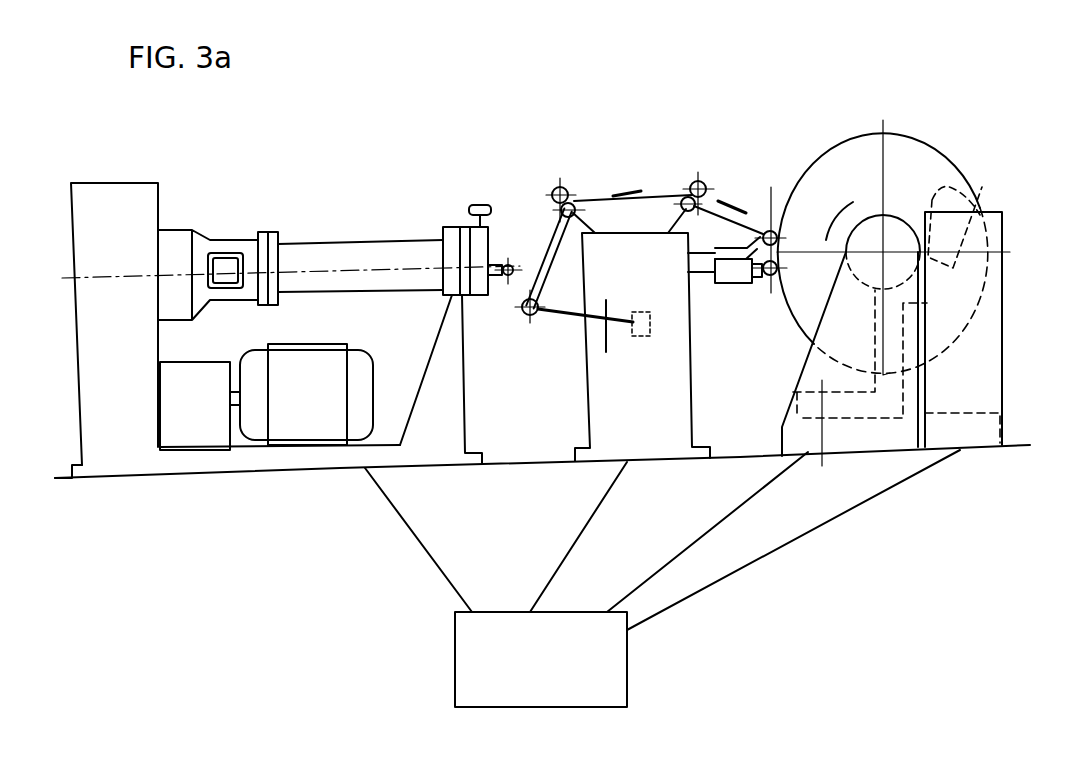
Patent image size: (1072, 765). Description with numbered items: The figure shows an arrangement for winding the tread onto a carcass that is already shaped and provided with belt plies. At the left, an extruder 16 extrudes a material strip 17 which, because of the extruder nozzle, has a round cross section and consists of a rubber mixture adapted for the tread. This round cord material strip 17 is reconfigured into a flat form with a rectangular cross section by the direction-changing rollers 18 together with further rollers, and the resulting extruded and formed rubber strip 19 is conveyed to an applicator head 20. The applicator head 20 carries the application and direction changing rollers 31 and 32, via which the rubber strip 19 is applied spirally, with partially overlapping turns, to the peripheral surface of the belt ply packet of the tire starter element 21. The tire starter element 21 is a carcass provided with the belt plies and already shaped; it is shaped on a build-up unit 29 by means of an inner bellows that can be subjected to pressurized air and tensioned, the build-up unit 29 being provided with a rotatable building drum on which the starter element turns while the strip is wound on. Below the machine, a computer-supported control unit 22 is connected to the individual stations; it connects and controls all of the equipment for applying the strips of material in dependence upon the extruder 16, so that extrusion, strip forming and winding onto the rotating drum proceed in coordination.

The extruder 16 is at (175, 250).
The material strip 17 is at (527, 284).
The direction-changing rollers 18 is at (576, 200).
The rubber strip 19 is at (770, 227).
The applicator head 20 is at (735, 270).
The tire starter element 21 is at (921, 165).
The control unit 22 is at (590, 658).
The build-up unit 29 is at (857, 330).
The application and direction changing roller 31 is at (777, 234).
The application and direction changing roller 32 is at (686, 193).